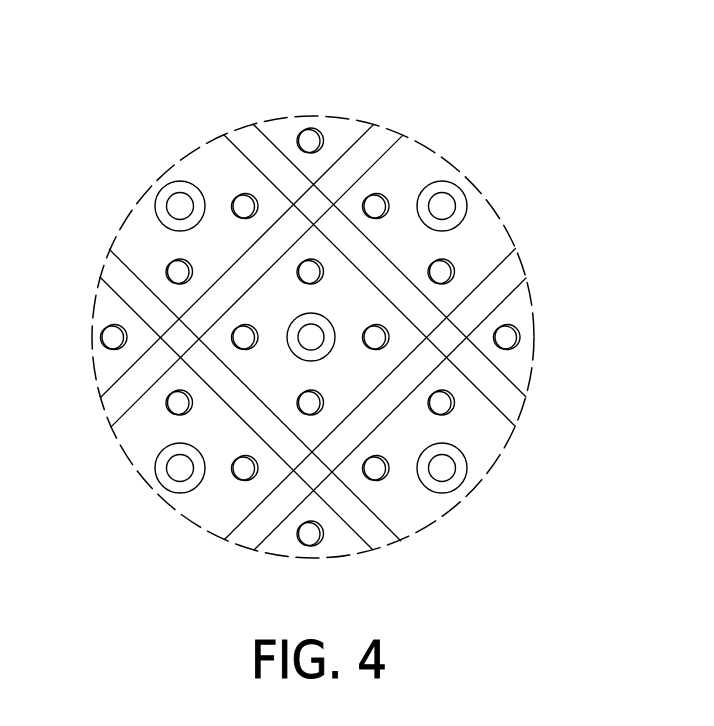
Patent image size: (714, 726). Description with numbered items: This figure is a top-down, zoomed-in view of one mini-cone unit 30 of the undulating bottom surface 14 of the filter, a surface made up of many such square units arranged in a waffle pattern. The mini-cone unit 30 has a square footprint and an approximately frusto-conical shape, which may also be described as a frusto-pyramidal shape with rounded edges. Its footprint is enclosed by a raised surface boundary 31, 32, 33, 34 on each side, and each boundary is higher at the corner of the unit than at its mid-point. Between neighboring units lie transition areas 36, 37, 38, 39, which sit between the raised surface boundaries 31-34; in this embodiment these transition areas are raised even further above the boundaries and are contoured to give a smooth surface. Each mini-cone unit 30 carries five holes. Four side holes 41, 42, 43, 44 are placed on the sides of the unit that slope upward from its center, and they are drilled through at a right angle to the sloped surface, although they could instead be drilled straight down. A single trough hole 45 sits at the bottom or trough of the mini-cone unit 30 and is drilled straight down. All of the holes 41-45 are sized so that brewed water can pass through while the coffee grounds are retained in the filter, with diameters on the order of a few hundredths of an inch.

The bottom surface 14 is at (542, 269).
The mini-cone unit 30 is at (311, 195).
The raised surface boundary 31 is at (379, 274).
The raised surface boundary 32 is at (383, 365).
The raised surface boundary 33 is at (272, 408).
The raised surface boundary 34 is at (248, 287).
The transition area 36 is at (313, 336).
The transition area 37 is at (377, 403).
The transition area 38 is at (240, 398).
The transition area 39 is at (254, 261).
The side hole 41 is at (380, 340).
The side hole 42 is at (312, 403).
The side hole 43 is at (242, 337).
The side hole 44 is at (311, 268).
The trough hole 45 is at (342, 255).